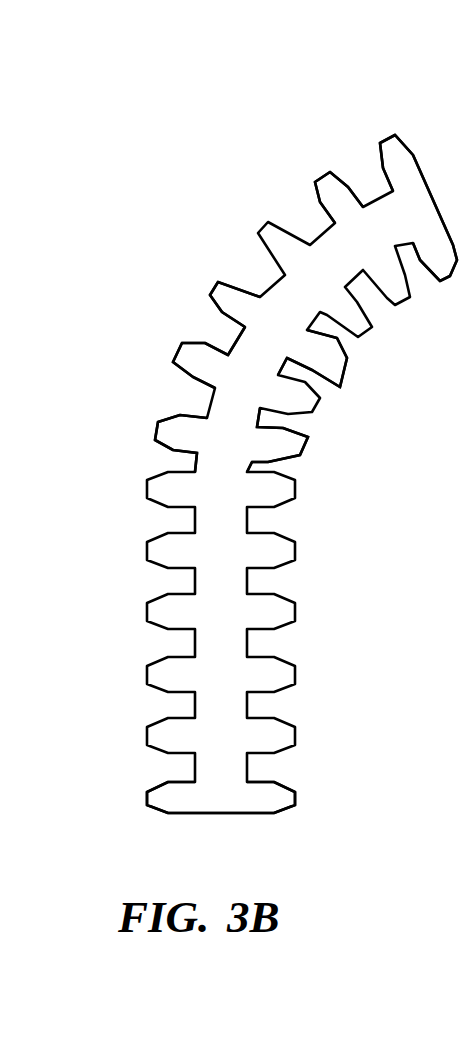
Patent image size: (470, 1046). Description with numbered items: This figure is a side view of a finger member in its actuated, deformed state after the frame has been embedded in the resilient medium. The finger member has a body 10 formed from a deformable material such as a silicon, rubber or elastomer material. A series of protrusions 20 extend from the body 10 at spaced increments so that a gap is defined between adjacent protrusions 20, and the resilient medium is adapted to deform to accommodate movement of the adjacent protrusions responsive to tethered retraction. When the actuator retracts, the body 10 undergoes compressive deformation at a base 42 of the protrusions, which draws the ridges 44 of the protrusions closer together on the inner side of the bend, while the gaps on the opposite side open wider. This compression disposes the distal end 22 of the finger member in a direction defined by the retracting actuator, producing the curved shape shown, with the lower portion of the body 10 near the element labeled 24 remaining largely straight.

The body 10 is at (133, 730).
The protrusions 20 is at (326, 173).
The distal end 22 is at (357, 146).
The proximal base 24 is at (319, 771).
The base 42 is at (233, 345).
The ridges 44 is at (285, 362).